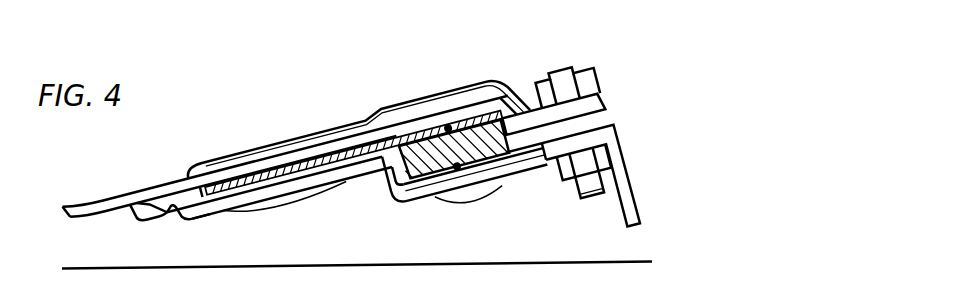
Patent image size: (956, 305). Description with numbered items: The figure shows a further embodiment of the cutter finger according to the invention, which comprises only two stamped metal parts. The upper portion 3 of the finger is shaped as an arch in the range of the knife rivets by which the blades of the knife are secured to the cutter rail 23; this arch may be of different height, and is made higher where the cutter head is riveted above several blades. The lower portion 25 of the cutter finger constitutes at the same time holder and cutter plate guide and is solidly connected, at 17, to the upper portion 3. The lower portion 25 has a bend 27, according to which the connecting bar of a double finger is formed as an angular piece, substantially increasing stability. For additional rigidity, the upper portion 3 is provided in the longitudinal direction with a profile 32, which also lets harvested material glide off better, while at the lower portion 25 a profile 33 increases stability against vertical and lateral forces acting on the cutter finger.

The upper portion 3 is at (152, 186).
The connection point 17 is at (129, 213).
The cutter rail 23 is at (487, 144).
The lower portion 25 is at (350, 181).
The bend 27 is at (384, 172).
The profile 32 is at (380, 122).
The profile 33 is at (290, 203).